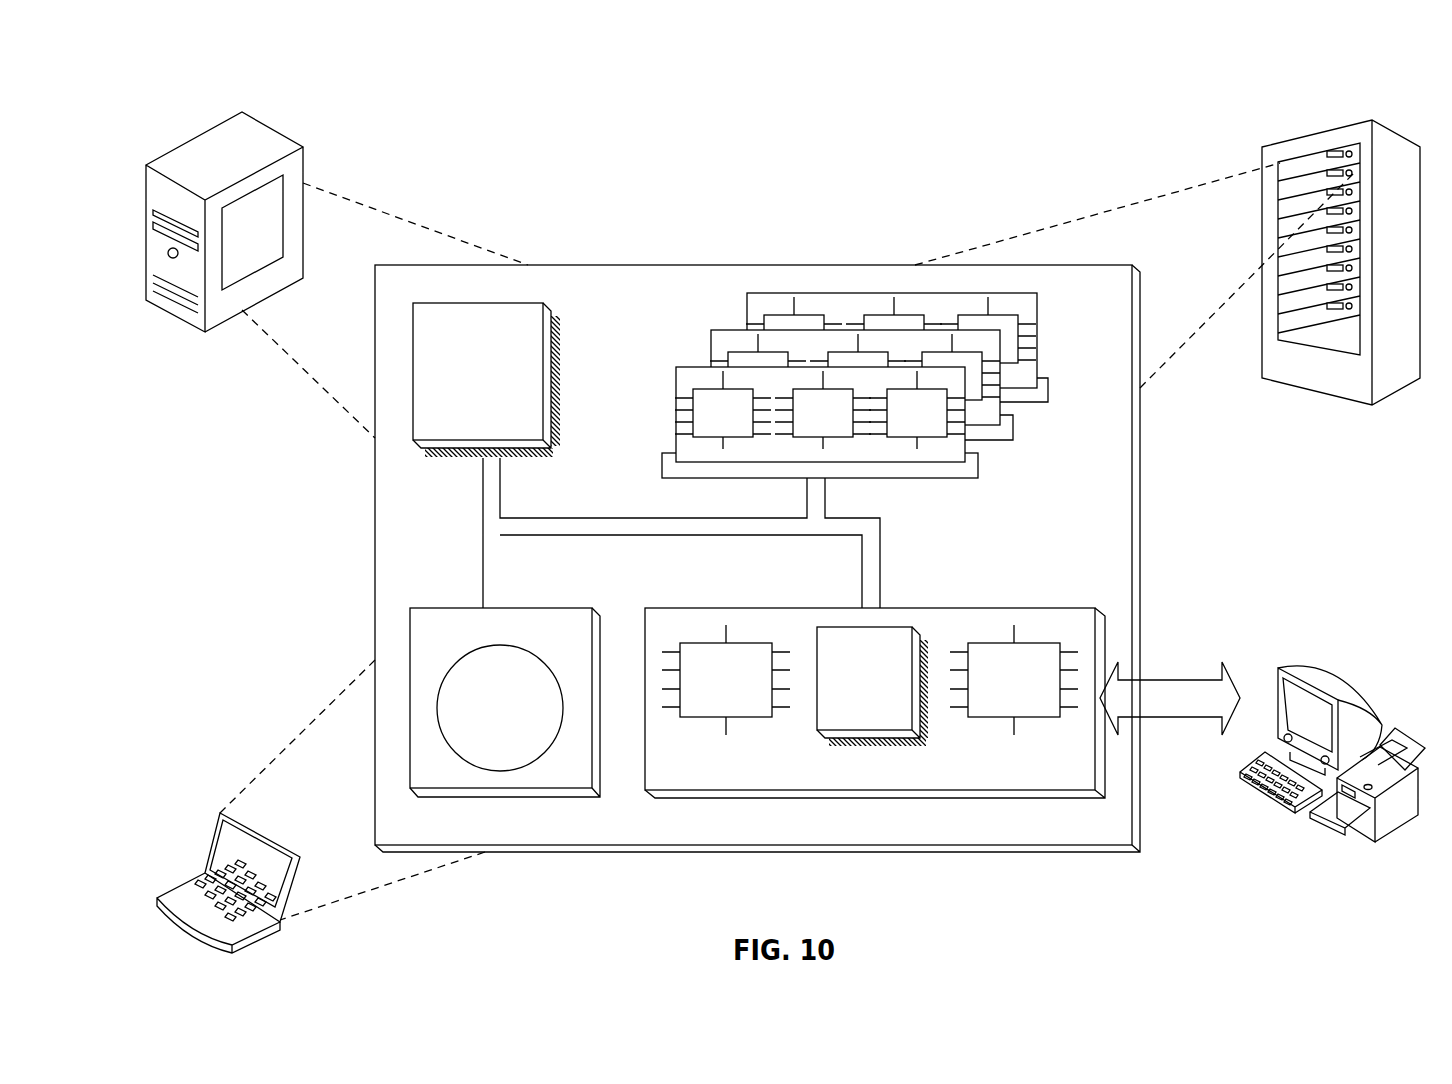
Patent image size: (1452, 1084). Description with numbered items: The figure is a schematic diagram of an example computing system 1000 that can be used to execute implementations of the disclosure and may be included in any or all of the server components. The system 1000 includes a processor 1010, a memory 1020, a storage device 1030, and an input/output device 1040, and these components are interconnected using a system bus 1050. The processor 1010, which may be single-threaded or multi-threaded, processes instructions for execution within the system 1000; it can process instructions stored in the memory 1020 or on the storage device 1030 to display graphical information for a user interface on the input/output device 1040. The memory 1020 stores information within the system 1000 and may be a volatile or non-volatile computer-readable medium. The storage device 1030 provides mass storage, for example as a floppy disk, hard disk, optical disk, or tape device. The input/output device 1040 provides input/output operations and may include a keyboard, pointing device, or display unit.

The computing system 1000 is at (305, 78).
The processor 1010 is at (500, 303).
The memory 1020 is at (1022, 436).
The storage device 1030 is at (420, 607).
The input/output device 1040 is at (1290, 672).
The system bus 1050 is at (650, 537).